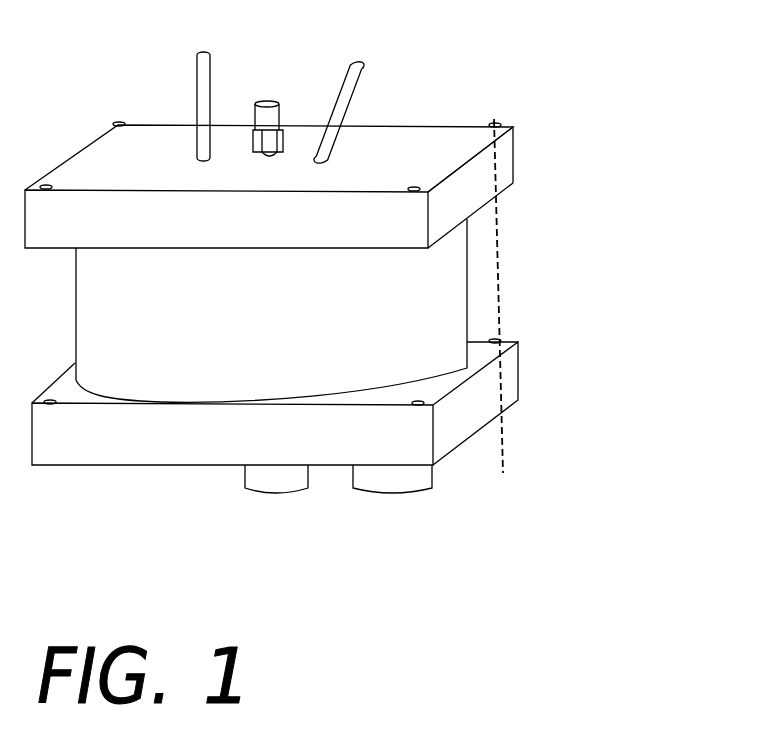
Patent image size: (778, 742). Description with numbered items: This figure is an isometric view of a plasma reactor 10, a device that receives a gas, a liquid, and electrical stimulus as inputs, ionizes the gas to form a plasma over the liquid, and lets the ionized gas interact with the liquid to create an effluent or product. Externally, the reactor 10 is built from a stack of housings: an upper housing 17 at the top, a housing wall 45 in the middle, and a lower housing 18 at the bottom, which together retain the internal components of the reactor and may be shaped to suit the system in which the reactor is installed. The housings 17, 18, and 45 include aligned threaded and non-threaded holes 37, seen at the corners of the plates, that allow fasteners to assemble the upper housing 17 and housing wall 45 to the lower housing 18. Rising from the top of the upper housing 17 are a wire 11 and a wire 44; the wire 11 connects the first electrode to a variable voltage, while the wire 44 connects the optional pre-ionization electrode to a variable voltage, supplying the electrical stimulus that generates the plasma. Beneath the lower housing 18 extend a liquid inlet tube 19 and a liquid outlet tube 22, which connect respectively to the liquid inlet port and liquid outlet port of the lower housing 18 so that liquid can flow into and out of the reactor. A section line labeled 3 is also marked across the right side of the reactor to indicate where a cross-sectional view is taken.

The plasma reactor 10 is at (360, 294).
The wire 11 is at (199, 88).
The threaded and non-threaded holes 37 is at (128, 127).
The wire 44 is at (362, 90).
The section line 3- 3 is at (494, 119).
The upper housing 17 is at (522, 155).
The lower housing 18 is at (527, 375).
The housing wall 45 is at (78, 309).
The liquid inlet tube 19 is at (252, 482).
The liquid outlet tube 22 is at (355, 488).